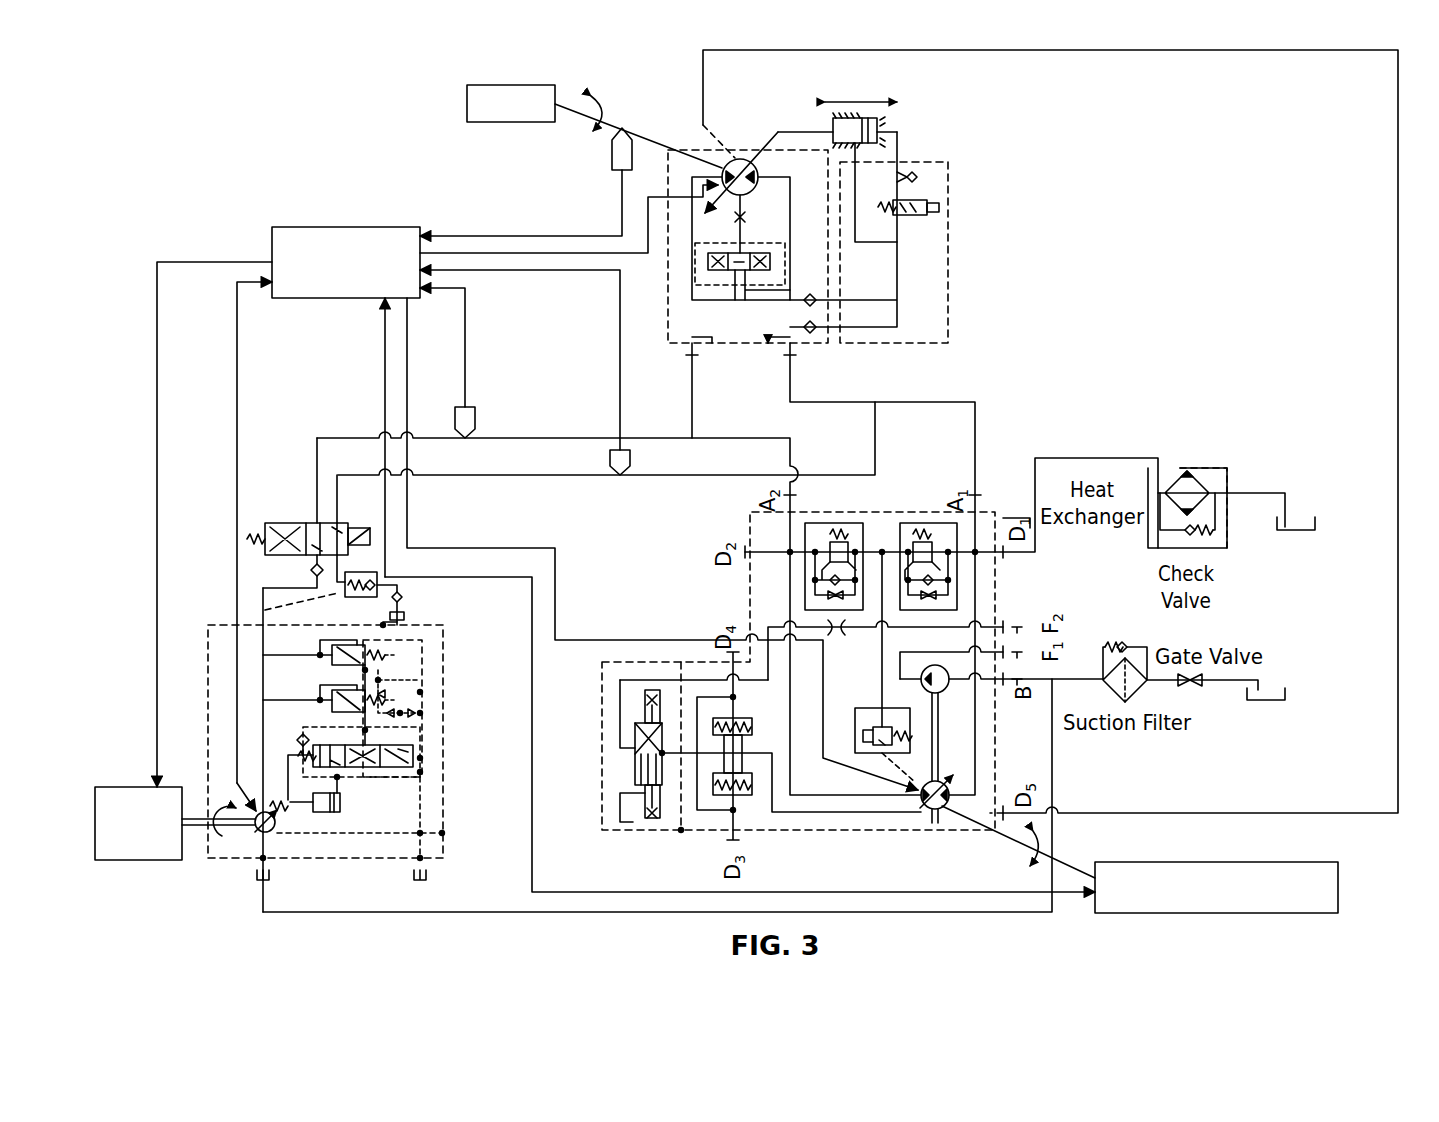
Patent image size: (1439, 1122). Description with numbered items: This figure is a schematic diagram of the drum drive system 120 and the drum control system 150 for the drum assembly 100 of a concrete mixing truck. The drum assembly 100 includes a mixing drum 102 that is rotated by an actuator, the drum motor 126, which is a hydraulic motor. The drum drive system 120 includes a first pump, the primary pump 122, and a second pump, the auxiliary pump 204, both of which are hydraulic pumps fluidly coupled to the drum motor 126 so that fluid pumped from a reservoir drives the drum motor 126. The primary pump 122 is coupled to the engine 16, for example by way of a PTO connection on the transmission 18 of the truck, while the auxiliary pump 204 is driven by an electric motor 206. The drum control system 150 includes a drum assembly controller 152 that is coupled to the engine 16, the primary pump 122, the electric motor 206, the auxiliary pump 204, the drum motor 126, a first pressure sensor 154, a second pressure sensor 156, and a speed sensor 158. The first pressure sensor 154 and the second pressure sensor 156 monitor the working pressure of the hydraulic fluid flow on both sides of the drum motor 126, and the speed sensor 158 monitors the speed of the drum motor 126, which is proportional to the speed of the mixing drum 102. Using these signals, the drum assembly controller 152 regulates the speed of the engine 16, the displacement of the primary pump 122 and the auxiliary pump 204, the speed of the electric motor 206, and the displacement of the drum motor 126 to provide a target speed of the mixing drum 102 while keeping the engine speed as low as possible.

The drum assembly 100 is at (150, 78).
The mixing drum 102 is at (498, 84).
The drum drive system 120 is at (1020, 332).
The primary pump 122 is at (955, 782).
The drum motor 126 is at (748, 160).
The drum control system 150 is at (222, 194).
The drum assembly controller 152 is at (340, 226).
The first pressure sensor 154 is at (462, 405).
The second pressure sensor 156 is at (626, 450).
The speed sensor 158 is at (626, 135).
The auxiliary pump 204 is at (258, 832).
The electric motor 206 is at (146, 786).
The engine 16 is at (1267, 887).
The transmission 18 is at (1338, 886).